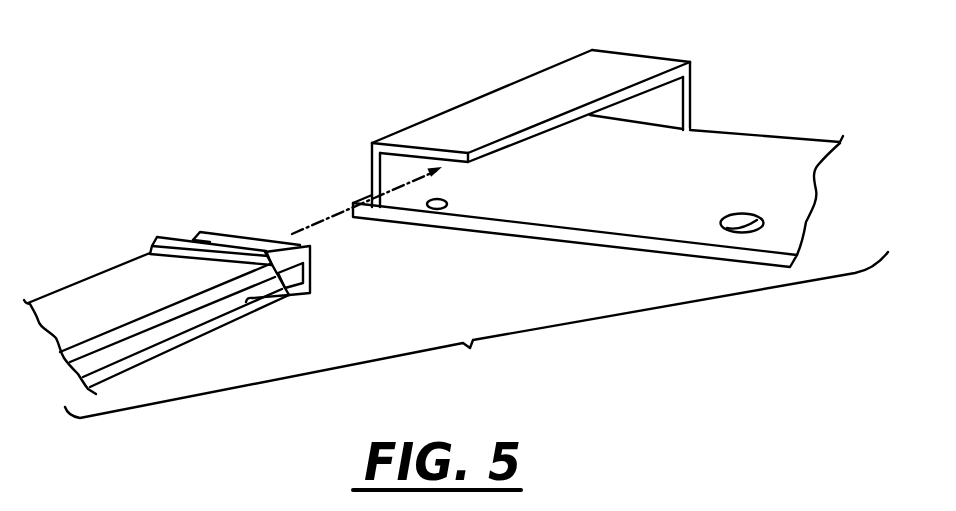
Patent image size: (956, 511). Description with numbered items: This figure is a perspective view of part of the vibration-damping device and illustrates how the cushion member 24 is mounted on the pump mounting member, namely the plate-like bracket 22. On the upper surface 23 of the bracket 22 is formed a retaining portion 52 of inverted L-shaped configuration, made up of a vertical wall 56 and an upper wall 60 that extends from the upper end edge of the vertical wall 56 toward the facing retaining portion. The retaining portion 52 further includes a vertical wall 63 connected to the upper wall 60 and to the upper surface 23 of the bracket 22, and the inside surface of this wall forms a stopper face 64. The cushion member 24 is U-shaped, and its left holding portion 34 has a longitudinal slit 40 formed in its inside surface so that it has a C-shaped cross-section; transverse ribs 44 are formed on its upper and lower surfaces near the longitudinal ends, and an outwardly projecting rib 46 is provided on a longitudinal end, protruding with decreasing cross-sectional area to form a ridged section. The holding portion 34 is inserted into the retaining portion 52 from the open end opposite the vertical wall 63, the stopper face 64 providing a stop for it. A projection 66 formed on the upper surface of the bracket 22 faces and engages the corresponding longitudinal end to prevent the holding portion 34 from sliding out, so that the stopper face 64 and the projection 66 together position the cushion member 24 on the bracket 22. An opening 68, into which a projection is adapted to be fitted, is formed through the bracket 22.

The bracket 22 is at (530, 247).
The upper surface 23 is at (645, 206).
The cushion member 24 is at (196, 350).
The left holding portion 34 is at (100, 290).
The longitudinal slit 40 is at (292, 297).
The transverse ribs 44 is at (173, 237).
The outwardly projecting rib 46 is at (258, 236).
The retaining portion 52 is at (508, 103).
The vertical wall 56 is at (372, 165).
The upper wall 60 is at (462, 110).
The vertical wall 63 is at (690, 78).
The stopper face 64 is at (668, 98).
The projection 66 is at (433, 210).
The opening 68 is at (751, 219).